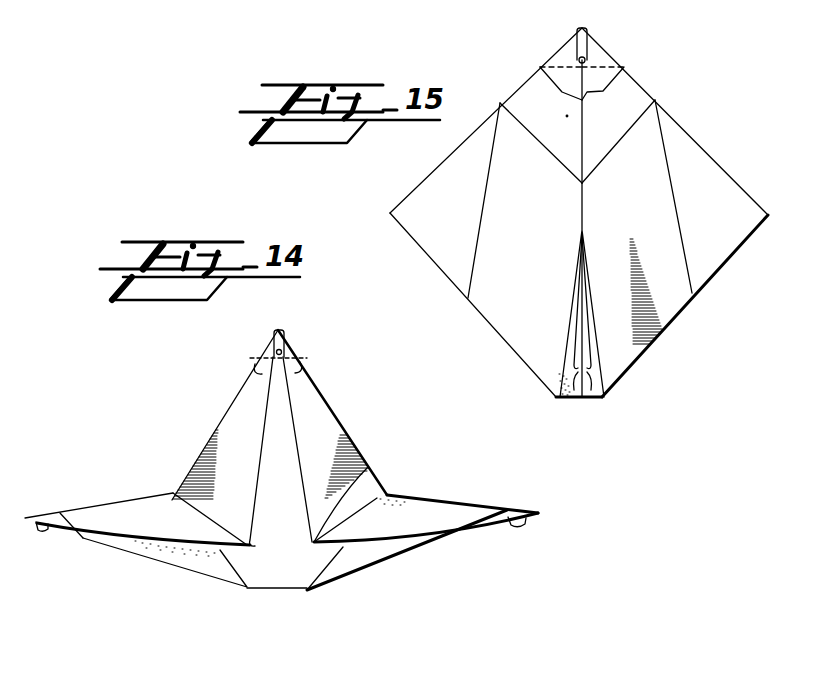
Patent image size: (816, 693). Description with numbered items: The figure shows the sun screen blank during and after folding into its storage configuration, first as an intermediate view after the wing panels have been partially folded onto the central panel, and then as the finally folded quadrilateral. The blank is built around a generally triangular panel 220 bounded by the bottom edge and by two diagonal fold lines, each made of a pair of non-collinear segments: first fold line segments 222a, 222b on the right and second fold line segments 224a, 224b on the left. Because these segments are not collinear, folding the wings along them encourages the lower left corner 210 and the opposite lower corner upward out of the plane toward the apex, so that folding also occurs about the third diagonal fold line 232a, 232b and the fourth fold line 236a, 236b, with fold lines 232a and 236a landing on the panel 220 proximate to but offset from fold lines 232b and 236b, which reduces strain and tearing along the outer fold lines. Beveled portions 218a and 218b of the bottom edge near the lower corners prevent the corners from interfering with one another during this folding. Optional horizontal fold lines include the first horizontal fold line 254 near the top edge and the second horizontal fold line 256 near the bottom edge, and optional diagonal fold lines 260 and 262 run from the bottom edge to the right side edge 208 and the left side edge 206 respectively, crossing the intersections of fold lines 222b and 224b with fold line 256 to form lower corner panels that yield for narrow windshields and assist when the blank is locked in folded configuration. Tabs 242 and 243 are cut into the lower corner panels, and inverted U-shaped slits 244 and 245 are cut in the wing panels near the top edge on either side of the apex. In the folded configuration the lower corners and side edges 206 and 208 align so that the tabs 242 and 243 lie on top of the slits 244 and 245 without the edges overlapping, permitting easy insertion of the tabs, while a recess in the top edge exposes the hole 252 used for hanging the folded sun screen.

In FIG. 14, the lower left corner 210 is at (93, 13).
In FIG. 15, the hole 252 is at (578, 58).
In FIG. 15, the slit 244 is at (562, 93).
In FIG. 14, the slit 244 is at (263, 375).
In FIG. 15, the slit 245 is at (620, 86).
In FIG. 14, the slit 245 is at (307, 367).
In FIG. 15, the beveled portion of bottom edge 218a is at (548, 92).
In FIG. 15, the beveled portion of bottom edge 218b is at (614, 121).
In FIG. 14, the first fold line segment 222a is at (330, 405).
In FIG. 15, the first fold line segment 222b is at (677, 120).
In FIG. 14, the first fold line segment 222b is at (368, 470).
In FIG. 14, the second fold line segment 224a is at (200, 443).
In FIG. 15, the second fold line segment 224b is at (435, 168).
In FIG. 14, the second fold line segment 224b is at (133, 500).
In FIG. 15, the second horizontal fold line 256 is at (480, 220).
In FIG. 15, the eighth diagonal fold line 262 is at (535, 140).
In FIG. 14, the eighth diagonal fold line 262 is at (80, 538).
In FIG. 15, the seventh diagonal fold line 260 is at (615, 150).
In FIG. 14, the seventh diagonal fold line 260 is at (483, 538).
In FIG. 15, the first horizontal fold line 254 is at (677, 210).
In FIG. 15, the third diagonal fold line 232a is at (587, 398).
In FIG. 14, the third diagonal fold line 232a is at (480, 455).
In FIG. 15, the third diagonal fold line 232b is at (686, 307).
In FIG. 14, the third diagonal fold line 232b is at (320, 555).
In FIG. 15, the fourth fold line 236a is at (567, 398).
In FIG. 14, the fourth fold line 236a is at (250, 502).
In FIG. 15, the fourth fold line 236b is at (485, 324).
In FIG. 14, the fourth fold line 236b is at (220, 573).
In FIG. 15, the left side edge 206 is at (573, 324).
In FIG. 15, the right side edge 208 is at (586, 330).
In FIG. 14, the triangular panel 220 is at (300, 545).
In FIG. 14, the tab 242 is at (42, 533).
In FIG. 14, the tab 243 is at (517, 523).